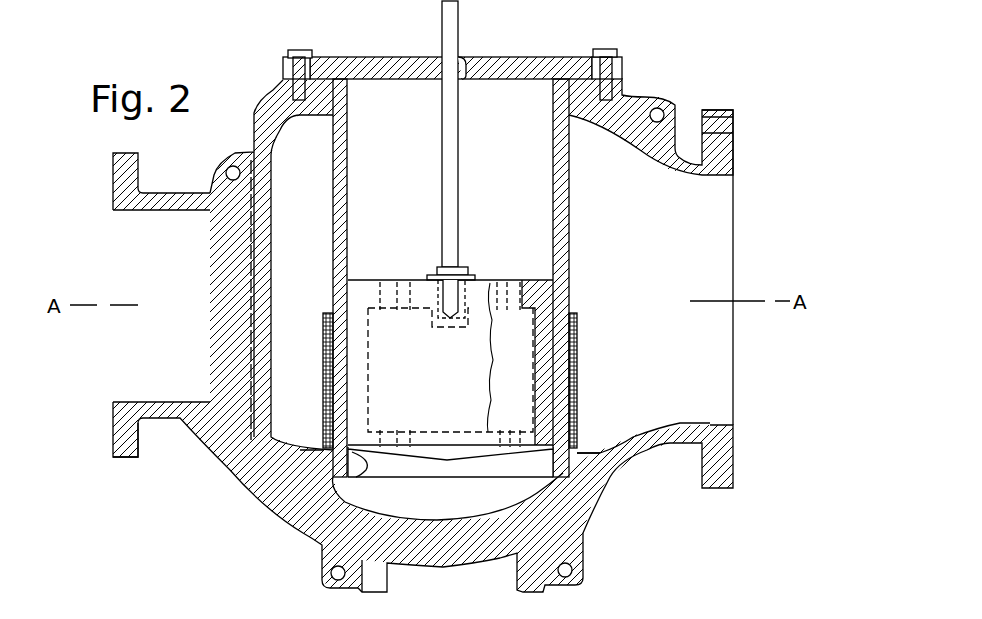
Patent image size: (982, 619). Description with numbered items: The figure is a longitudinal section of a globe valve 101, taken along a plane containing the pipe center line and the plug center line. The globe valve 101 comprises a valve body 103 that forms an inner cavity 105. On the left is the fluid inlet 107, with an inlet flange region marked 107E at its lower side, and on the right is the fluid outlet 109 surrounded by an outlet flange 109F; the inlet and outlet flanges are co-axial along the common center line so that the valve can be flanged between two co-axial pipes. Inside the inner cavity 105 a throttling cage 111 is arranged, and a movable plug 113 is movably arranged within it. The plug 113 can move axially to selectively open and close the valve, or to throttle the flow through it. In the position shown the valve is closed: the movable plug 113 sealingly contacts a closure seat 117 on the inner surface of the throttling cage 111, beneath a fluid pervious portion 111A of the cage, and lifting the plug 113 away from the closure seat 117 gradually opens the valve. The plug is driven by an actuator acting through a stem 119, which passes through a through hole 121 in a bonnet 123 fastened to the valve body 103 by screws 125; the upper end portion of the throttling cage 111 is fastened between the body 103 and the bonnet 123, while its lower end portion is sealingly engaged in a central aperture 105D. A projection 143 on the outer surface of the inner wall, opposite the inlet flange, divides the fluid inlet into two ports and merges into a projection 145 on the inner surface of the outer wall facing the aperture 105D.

The globe valve 101 is at (263, 538).
The valve body 103 is at (254, 146).
The inner cavity 105 is at (316, 275).
The central aperture 105D is at (600, 470).
The fluid inlet 107 is at (183, 299).
The inlet flange 107E is at (113, 450).
The fluid outlet 109 is at (692, 280).
The outlet flange 109F is at (728, 160).
The throttling cage 111 is at (569, 215).
The fluid pervious portion 111A is at (597, 313).
The movable plug 113 is at (476, 298).
The closure seat 117 is at (356, 455).
The stem 119 is at (442, 152).
The through hole 121 is at (458, 55).
The bonnet 123 is at (406, 60).
The screws 125 is at (298, 55).
The projection 143 is at (212, 345).
The projection 145 is at (483, 533).